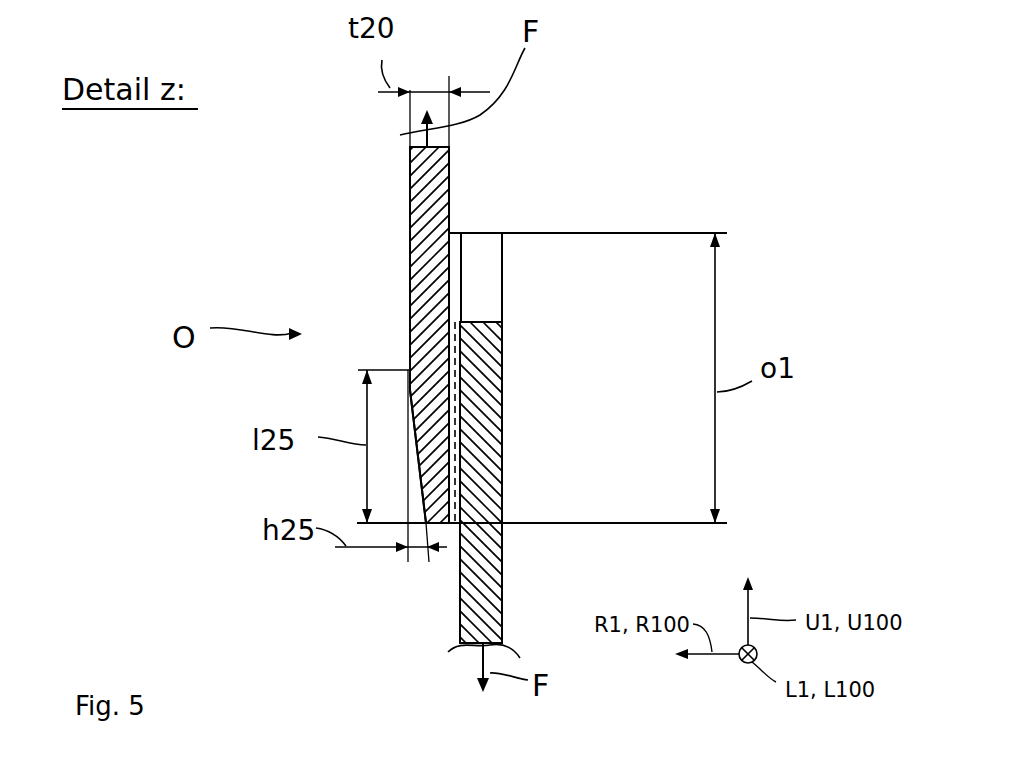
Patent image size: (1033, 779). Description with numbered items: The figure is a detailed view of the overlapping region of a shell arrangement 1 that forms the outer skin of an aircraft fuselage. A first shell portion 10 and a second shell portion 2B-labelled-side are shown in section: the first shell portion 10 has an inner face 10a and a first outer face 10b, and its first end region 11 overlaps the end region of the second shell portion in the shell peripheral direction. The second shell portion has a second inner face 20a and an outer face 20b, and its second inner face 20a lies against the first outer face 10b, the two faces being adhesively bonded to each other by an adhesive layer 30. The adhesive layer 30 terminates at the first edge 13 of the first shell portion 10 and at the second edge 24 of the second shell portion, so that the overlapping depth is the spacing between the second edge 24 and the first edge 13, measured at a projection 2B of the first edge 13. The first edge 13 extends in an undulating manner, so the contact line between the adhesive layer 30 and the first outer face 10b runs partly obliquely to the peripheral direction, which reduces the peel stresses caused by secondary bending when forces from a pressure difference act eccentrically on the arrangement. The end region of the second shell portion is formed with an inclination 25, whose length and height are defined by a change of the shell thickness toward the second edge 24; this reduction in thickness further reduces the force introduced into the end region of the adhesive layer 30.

The shell arrangement 1 is at (224, 192).
The first shell portion 10 is at (495, 555).
The inner face of the first shell portion 10a is at (512, 420).
The first outer face 10b is at (458, 600).
The first end region 11 is at (548, 343).
The first edge 13 is at (503, 227).
The second inner face 20a is at (452, 208).
The outer face of the second shell portion 20b is at (402, 286).
The second edge 24 is at (495, 316).
The inclination 25 is at (340, 481).
The adhesive layer 30 is at (457, 302).
The projection of the edge 2B is at (486, 226).